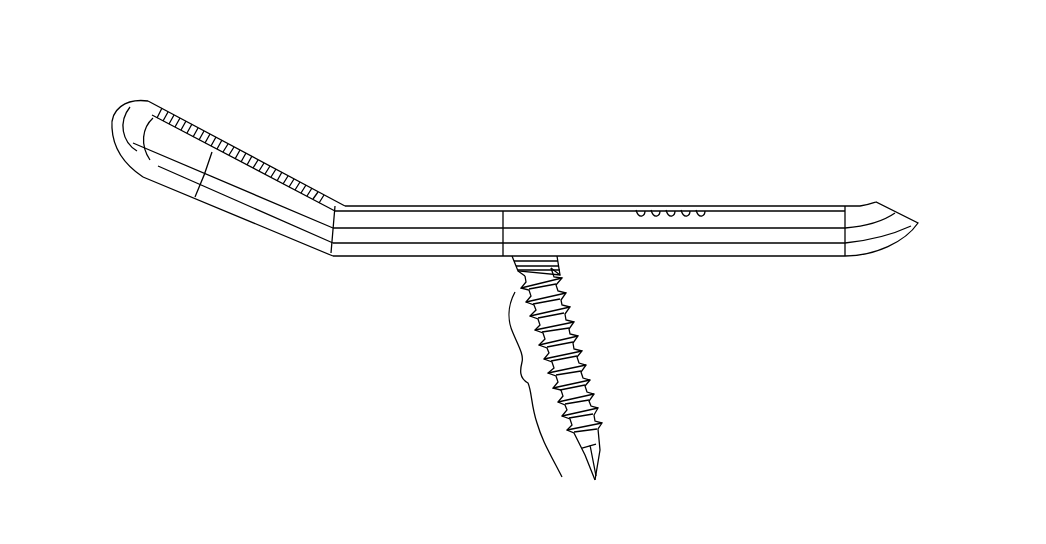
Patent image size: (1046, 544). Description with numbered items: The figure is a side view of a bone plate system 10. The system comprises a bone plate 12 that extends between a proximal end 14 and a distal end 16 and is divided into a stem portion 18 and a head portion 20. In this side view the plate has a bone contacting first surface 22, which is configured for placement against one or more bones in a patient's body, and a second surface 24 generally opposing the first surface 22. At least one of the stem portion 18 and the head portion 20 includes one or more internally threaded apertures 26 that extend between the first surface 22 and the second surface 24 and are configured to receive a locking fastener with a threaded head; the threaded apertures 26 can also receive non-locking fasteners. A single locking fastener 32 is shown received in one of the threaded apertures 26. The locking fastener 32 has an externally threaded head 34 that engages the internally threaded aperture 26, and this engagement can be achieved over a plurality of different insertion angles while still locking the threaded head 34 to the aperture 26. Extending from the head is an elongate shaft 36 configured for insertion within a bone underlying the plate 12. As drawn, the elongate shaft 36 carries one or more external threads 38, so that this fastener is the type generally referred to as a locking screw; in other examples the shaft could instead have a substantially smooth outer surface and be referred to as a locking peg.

The bone plate system 10 is at (694, 127).
The bone plate 12 is at (591, 200).
The proximal end 14 is at (919, 225).
The distal end 16 is at (115, 113).
The stem portion 18 is at (758, 237).
The head portion 20 is at (242, 207).
The bone contacting first surface 22 is at (388, 257).
The second surface 24 is at (409, 206).
The internally threaded apertures 26 is at (208, 138).
The locking fastener 32 is at (602, 336).
The externally threaded head 34 is at (510, 259).
The elongate shaft 36 is at (588, 387).
The external threads 38 is at (512, 384).